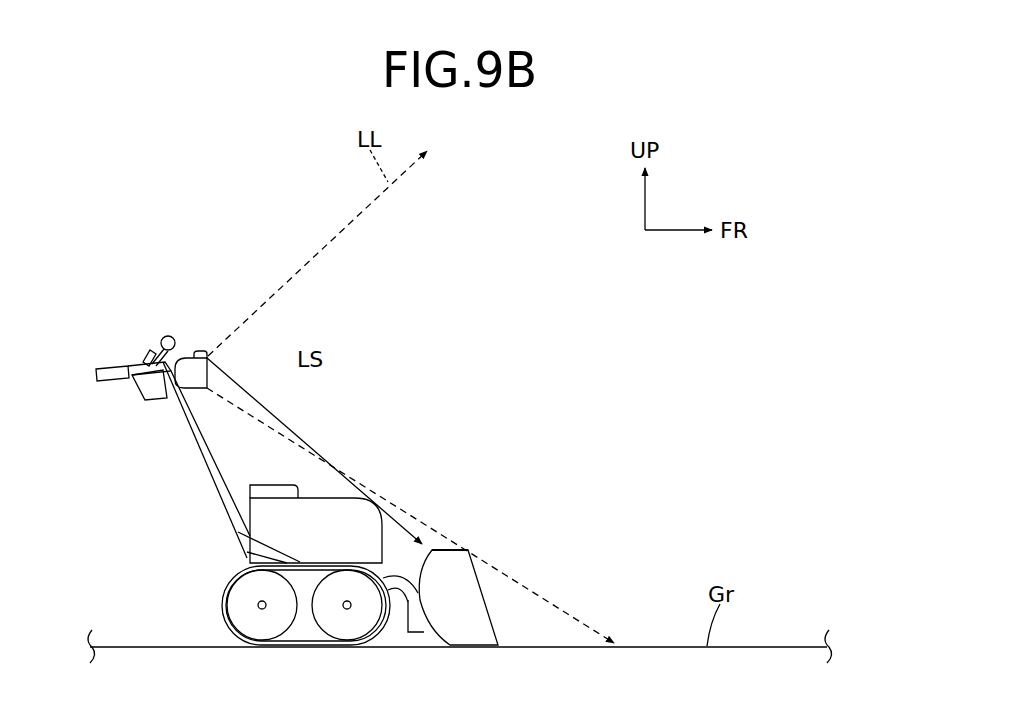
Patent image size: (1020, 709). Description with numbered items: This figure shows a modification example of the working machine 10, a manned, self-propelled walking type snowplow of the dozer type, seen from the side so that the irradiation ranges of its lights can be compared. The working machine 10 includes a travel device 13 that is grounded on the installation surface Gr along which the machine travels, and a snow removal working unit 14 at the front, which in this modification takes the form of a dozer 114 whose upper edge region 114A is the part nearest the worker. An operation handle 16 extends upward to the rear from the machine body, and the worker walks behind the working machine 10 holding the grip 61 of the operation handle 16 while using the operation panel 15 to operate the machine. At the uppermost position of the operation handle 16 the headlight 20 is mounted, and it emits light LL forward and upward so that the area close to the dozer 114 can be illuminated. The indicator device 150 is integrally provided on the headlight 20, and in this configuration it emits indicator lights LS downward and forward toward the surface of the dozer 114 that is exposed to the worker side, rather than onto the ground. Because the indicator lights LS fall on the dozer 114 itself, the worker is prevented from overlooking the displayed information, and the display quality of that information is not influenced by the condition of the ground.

The working machine 10 is at (76, 260).
The travel device 13 is at (206, 604).
The snow removal working unit 14 is at (486, 594).
The dozer 114 is at (452, 572).
The upper edge of blade 114A is at (432, 549).
The operation panel 15 is at (144, 346).
The operation handle 16 is at (103, 352).
The grip 61 is at (113, 381).
The headlight 20 is at (187, 353).
The indicator device 150 is at (200, 351).